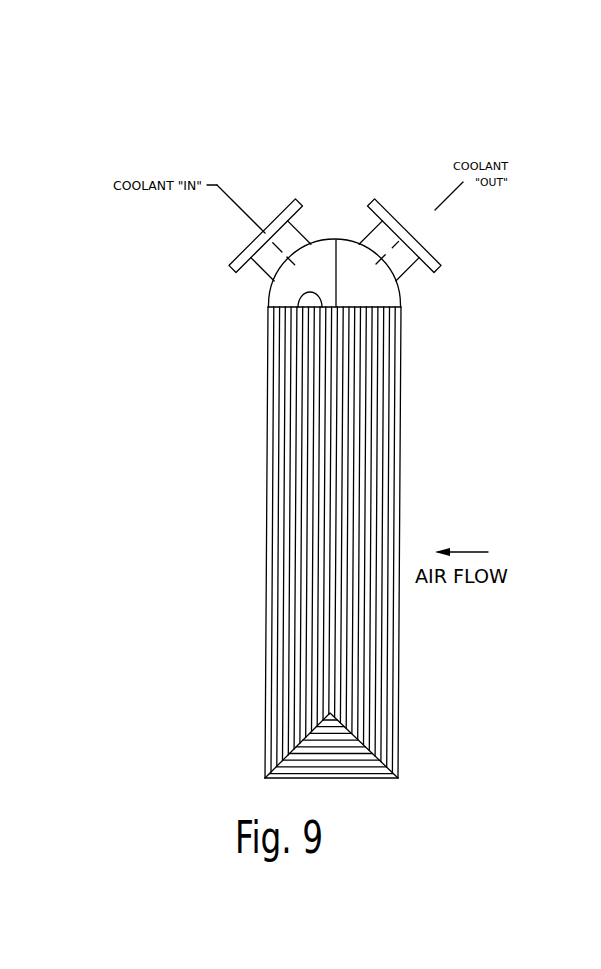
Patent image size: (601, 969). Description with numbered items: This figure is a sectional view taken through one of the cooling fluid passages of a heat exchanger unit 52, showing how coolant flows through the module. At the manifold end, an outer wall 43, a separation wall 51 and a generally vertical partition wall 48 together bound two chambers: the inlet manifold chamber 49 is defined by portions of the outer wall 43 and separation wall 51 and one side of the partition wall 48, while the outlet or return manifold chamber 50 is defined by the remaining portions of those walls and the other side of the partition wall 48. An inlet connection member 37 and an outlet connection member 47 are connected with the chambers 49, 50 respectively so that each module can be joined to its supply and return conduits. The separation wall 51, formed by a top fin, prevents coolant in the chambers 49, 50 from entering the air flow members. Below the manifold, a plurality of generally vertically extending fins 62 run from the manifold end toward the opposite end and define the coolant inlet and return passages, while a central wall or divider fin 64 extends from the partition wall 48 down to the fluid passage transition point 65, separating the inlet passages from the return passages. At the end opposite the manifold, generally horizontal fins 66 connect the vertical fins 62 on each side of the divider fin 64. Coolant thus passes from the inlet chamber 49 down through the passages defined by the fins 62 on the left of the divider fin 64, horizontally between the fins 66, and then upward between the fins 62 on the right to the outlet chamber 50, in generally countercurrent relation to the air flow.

The inlet connection member 37 is at (305, 233).
The outer wall 43 is at (323, 240).
The partition wall 48 is at (340, 270).
The outlet connection member 47 is at (413, 265).
The outlet manifold chamber 50 is at (400, 297).
The inlet manifold chamber 49 is at (300, 282).
The separation wall 51 is at (300, 297).
The vertically extending fins 62 is at (350, 392).
The heat exchanger unit 52 is at (252, 559).
The central wall or divider fin 64 is at (330, 592).
The fluid passage transition point 65 is at (330, 713).
The horizontal fins 66 is at (330, 758).